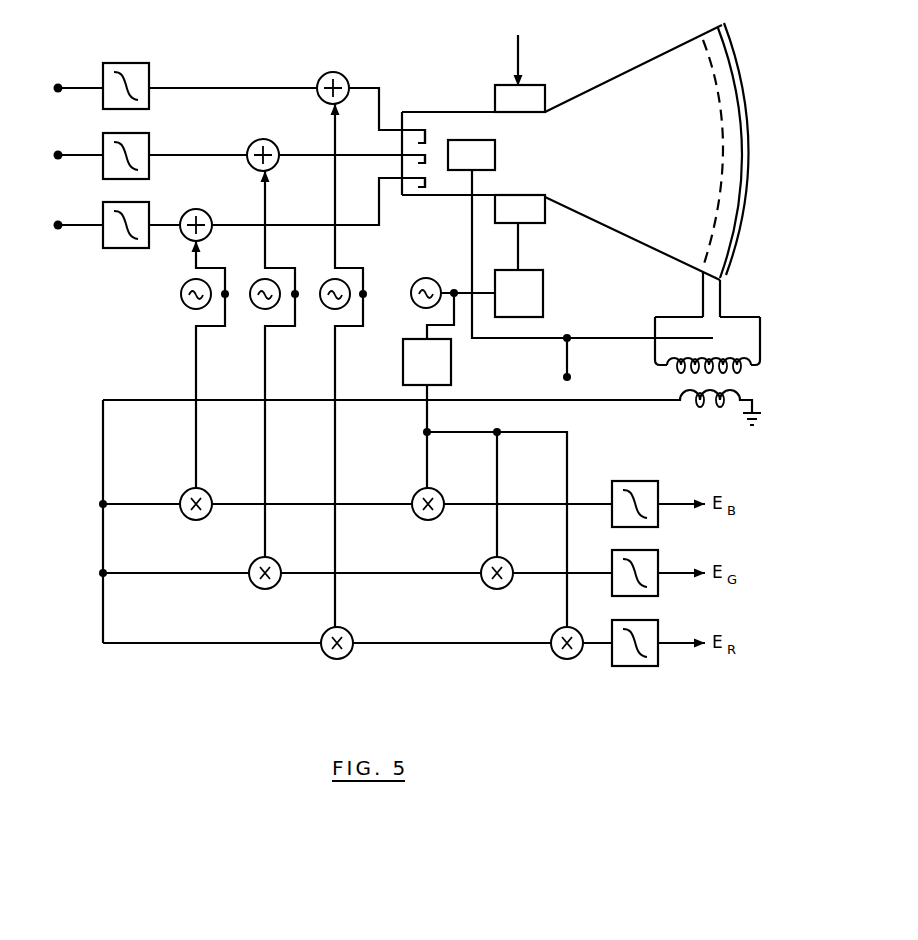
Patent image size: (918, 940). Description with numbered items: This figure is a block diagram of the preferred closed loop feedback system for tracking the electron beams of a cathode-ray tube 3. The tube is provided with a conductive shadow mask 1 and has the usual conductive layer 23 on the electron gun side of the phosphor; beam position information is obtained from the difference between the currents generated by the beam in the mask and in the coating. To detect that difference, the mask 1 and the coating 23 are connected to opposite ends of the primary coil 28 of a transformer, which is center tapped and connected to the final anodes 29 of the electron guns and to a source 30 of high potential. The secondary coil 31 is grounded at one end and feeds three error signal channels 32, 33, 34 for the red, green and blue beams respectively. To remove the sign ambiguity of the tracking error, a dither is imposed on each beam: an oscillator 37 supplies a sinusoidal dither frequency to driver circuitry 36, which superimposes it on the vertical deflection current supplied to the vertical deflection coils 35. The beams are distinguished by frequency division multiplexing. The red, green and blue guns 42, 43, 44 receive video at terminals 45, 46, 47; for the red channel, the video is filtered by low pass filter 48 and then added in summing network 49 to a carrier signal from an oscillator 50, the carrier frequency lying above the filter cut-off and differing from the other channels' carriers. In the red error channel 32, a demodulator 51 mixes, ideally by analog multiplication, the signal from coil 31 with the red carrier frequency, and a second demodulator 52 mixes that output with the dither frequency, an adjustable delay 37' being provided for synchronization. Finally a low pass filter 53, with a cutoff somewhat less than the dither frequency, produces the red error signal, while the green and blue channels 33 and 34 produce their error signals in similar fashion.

The conductive shadow mask 1 is at (720, 118).
The cathode-ray tube 3 is at (612, 77).
The conductive layer 23 is at (729, 88).
The primary coil 28 is at (727, 350).
The final anodes 29 is at (495, 153).
The source of high potential 30 is at (571, 377).
The secondary coil 31 is at (708, 408).
The red error signal channel 32 is at (122, 641).
The green error signal channel 33 is at (125, 572).
The blue error signal channel 34 is at (125, 502).
The vertical deflection coils 35 is at (530, 83).
The driver circuitry 36 is at (543, 296).
The oscillator 37 is at (419, 276).
The adjustable delay 37' is at (448, 362).
The red gun 42 is at (408, 128).
The green gun 43 is at (420, 150).
The blue gun 44 is at (406, 183).
The red video terminal 45 is at (59, 77).
The green video terminal 46 is at (59, 144).
The blue video terminal 47 is at (59, 214).
The low pass filter 48 is at (126, 63).
The summing network 49 is at (337, 72).
The oscillator 50 is at (325, 280).
The demodulator 51 is at (327, 660).
The second demodulator 52 is at (555, 658).
The low pass filter 53 is at (642, 666).